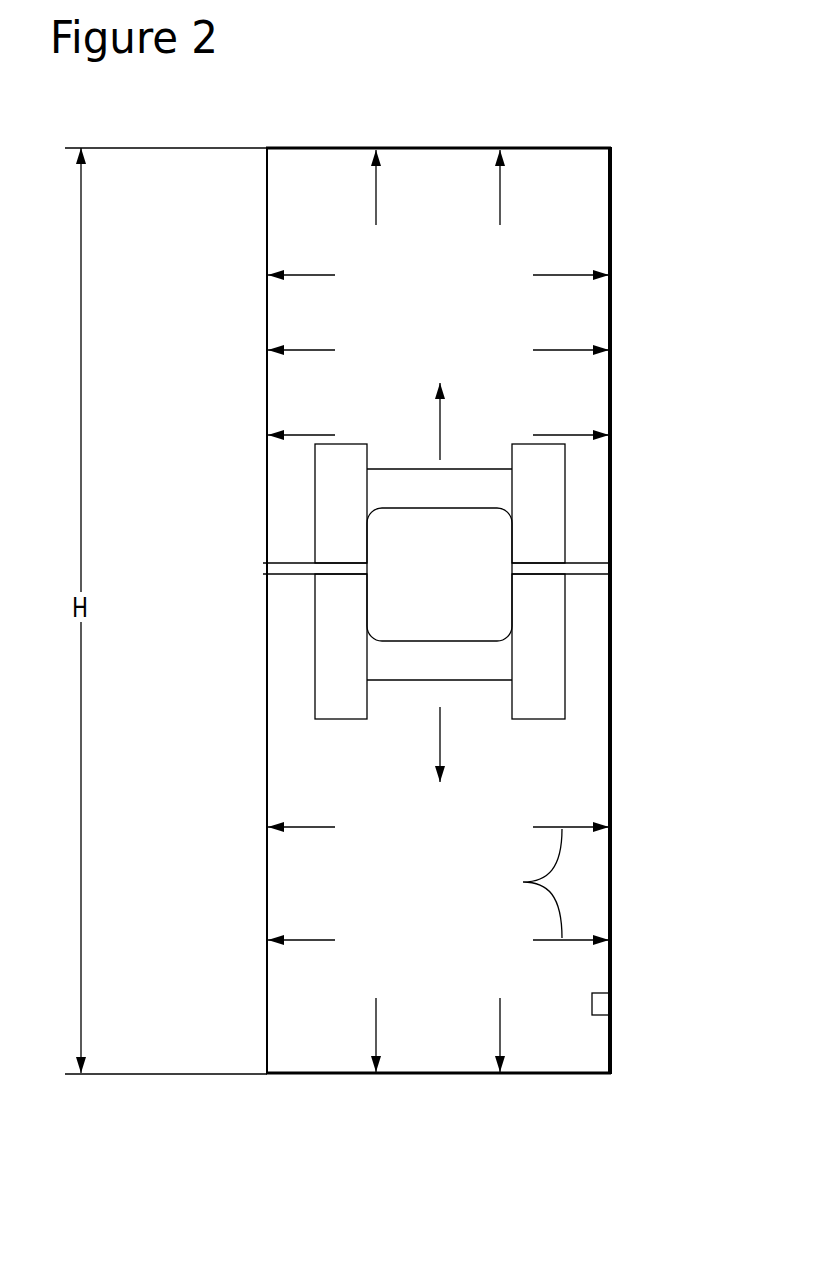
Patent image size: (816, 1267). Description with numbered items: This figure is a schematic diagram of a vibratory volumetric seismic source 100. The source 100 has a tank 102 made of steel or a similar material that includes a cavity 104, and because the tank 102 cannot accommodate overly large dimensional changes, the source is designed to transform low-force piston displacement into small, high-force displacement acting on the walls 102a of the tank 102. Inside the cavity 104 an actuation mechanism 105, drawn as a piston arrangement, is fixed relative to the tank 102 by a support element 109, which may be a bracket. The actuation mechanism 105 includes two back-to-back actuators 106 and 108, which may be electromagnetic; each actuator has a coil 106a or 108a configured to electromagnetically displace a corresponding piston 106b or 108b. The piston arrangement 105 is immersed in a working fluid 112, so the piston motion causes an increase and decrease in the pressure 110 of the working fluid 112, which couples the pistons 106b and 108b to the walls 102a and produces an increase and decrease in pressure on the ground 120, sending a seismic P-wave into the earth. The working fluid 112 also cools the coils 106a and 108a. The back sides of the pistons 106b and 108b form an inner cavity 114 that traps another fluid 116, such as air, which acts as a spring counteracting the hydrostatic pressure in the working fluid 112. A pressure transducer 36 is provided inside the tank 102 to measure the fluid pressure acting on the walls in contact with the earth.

The volumetric source 100 is at (463, 119).
The tank 102 is at (267, 226).
The walls 102a is at (267, 878).
The cavity 104 is at (460, 309).
The actuation mechanism 105 is at (300, 617).
The actuator 106 is at (567, 512).
The coil 106a is at (335, 498).
The piston 106b is at (400, 485).
The actuator 108 is at (567, 652).
The coil 108a is at (327, 643).
The piston 108b is at (388, 667).
The support element 109 is at (592, 562).
The pressure 110 is at (543, 883).
The working fluid 112 is at (310, 983).
The inner cavity 114 is at (467, 598).
The fluid 116 is at (462, 559).
The ground 120 is at (712, 598).
The pressure transducer 36 is at (600, 1005).